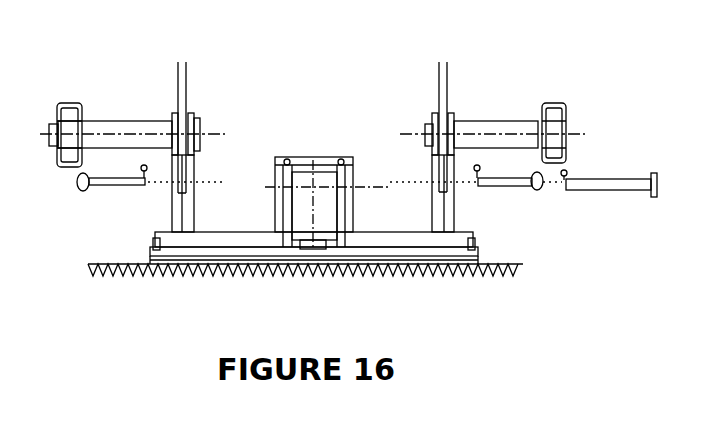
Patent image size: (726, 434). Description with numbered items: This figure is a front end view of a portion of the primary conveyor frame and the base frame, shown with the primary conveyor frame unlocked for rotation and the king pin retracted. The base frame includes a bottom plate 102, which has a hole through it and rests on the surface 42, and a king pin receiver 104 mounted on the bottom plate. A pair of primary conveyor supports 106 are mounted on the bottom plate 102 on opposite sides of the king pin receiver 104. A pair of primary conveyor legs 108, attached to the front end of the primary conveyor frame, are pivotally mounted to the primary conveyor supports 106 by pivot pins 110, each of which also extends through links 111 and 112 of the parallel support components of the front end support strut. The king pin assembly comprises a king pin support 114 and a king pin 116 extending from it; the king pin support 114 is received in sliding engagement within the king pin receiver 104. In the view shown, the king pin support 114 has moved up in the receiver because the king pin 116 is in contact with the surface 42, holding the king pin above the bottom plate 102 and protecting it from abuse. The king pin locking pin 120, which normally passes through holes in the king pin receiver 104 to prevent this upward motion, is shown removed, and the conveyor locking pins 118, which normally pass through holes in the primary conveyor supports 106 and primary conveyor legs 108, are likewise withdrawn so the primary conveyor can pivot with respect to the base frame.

The surface 42 is at (505, 265).
The bottom plate 102 is at (398, 265).
The king pin receiver 104 is at (275, 213).
The primary conveyor supports 106 is at (172, 218).
The primary conveyor legs 108 is at (186, 90).
The pivot pins 110 is at (125, 116).
The link 111 is at (562, 102).
The link 112 is at (75, 95).
The king pin support 114 is at (330, 222).
The king pin 116 is at (313, 248).
The conveyor locking pins 118 is at (92, 192).
The king pin locking pin 120 is at (606, 172).